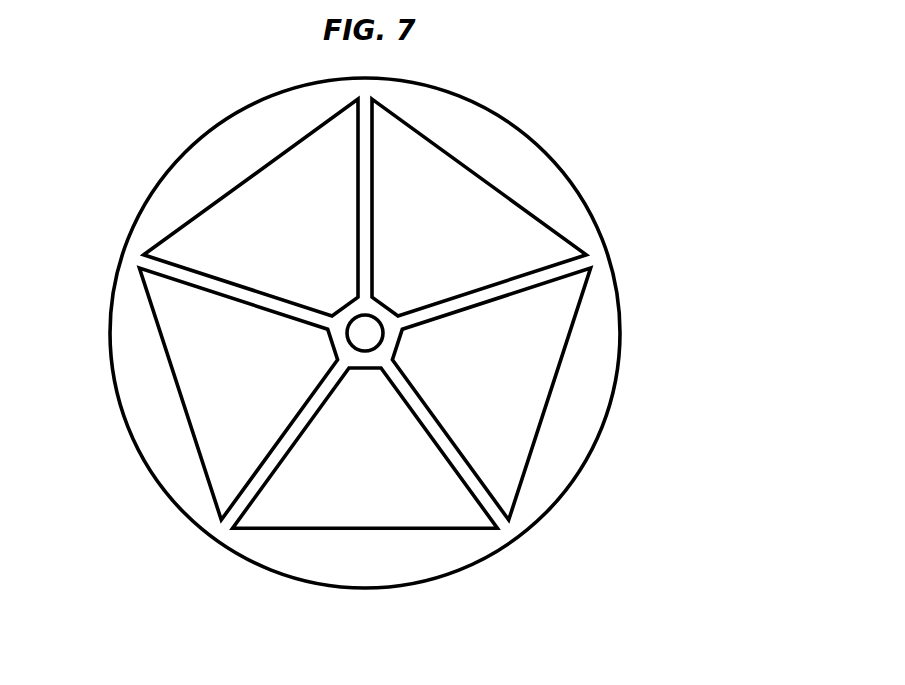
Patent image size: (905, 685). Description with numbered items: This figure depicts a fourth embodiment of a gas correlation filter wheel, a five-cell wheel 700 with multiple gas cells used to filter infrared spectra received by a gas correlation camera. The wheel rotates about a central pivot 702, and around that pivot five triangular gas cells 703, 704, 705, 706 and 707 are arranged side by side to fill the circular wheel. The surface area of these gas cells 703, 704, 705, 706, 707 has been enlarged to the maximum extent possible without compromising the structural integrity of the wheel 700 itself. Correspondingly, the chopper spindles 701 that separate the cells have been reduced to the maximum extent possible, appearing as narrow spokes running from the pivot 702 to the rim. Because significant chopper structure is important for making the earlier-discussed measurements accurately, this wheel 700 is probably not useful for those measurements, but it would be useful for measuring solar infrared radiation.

The 5-cell wheel 700 is at (630, 120).
The chopper spindles 701 is at (605, 315).
The pivot 702 is at (370, 328).
The gas cell 703 is at (518, 442).
The gas cell 704 is at (340, 512).
The gas cell 705 is at (195, 393).
The gas cell 706 is at (250, 205).
The gas cell 707 is at (525, 237).